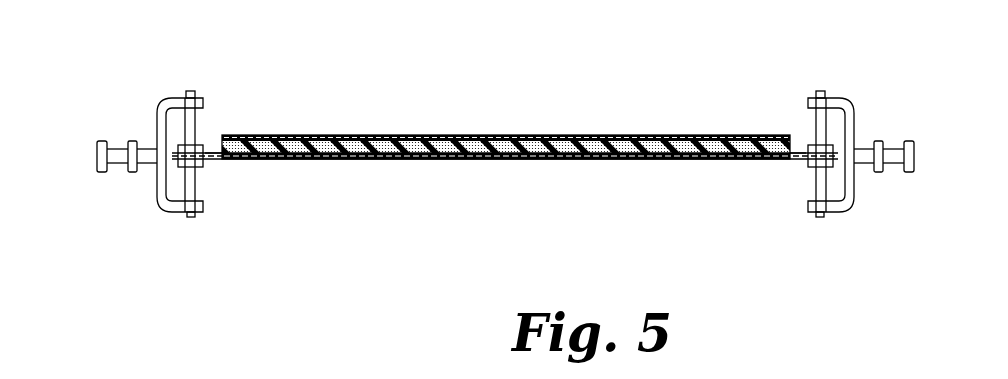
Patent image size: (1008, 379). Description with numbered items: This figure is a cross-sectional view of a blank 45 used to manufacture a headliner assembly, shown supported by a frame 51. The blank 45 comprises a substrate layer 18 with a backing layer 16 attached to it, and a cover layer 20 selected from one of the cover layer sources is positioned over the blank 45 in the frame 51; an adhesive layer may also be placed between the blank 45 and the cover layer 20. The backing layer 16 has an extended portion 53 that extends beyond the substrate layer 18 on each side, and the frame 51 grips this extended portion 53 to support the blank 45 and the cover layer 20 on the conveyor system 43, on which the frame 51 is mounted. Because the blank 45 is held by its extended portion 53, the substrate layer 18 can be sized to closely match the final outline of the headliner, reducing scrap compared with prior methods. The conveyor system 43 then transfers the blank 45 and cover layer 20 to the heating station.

The backing layer 16 is at (397, 159).
The substrate layer 18 is at (382, 135).
The cover layer 20 is at (525, 135).
The blank 45 is at (687, 135).
The conveyor system 43 is at (122, 163).
The frame 51 is at (168, 213).
The extended portion 53 is at (213, 160).